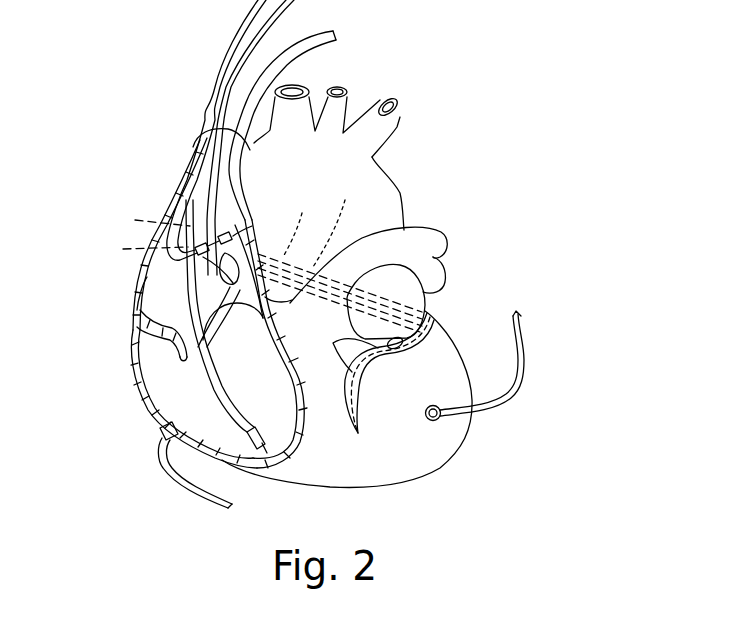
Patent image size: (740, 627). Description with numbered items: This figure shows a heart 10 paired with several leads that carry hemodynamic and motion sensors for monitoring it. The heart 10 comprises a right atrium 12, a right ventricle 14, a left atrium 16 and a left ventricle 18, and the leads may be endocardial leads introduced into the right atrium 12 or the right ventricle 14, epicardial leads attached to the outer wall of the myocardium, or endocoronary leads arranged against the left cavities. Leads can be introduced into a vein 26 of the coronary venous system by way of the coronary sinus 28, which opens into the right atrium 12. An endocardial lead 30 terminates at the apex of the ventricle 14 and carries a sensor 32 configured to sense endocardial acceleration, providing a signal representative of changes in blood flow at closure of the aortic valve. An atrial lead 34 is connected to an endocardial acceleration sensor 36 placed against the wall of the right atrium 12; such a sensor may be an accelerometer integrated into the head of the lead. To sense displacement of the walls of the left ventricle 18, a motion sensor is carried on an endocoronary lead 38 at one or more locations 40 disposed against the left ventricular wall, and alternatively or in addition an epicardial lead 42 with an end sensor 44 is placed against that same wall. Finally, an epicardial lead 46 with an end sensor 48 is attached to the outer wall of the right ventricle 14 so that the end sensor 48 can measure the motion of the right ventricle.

The heart 10 is at (400, 462).
The right atrium 12 is at (147, 277).
The right ventricle 14 is at (163, 388).
The left atrium 16 is at (370, 193).
The left ventricle 18 is at (430, 373).
The vein 26 is at (340, 254).
The coronary sinus 28 is at (223, 283).
The endocardial lead 30 is at (222, 297).
The sensor 32 is at (265, 433).
The atrial lead 34 is at (168, 212).
The endocardial acceleration sensor 36 is at (233, 231).
The endocoronary lead 38 is at (314, 228).
The locations 40 is at (398, 352).
The epicardial lead 42 is at (519, 382).
The end sensor 44 is at (425, 414).
The epicardial lead 46 is at (200, 497).
The end sensor 48 is at (157, 433).